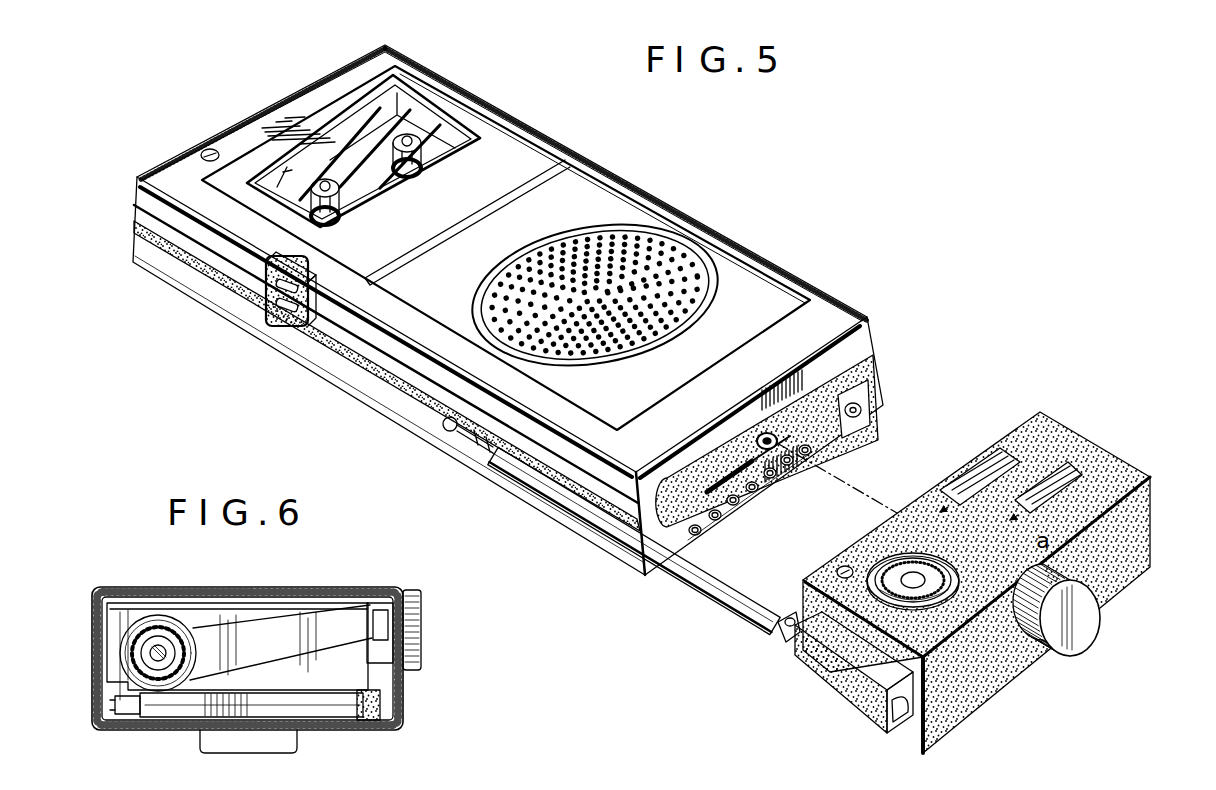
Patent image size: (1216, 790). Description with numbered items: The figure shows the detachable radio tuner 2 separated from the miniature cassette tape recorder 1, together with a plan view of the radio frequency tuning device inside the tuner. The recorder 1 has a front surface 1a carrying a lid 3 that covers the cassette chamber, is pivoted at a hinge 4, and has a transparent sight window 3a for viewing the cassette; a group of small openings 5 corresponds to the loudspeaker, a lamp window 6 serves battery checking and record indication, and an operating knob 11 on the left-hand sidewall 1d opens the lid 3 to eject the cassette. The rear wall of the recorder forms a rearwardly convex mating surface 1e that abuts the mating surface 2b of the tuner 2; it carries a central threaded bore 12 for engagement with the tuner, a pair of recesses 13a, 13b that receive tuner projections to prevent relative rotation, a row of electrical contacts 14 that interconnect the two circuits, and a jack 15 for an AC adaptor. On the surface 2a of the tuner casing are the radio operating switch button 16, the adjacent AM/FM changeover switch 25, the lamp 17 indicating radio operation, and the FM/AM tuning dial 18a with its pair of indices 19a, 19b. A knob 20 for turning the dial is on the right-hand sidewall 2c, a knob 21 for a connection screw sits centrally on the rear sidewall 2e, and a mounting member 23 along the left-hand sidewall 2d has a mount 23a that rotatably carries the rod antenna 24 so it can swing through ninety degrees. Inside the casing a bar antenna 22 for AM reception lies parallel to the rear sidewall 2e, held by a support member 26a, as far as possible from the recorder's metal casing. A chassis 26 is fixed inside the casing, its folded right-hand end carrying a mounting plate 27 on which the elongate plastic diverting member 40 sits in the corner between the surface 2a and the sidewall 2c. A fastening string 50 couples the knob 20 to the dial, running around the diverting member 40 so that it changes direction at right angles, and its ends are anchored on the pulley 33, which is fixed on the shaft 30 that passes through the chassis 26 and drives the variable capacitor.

In FIG. 5, the tape recorder 1 is at (622, 146).
In FIG. 5, the front surface 1a is at (630, 215).
In FIG. 5, the left-hand sidewall 1d is at (380, 393).
In FIG. 5, the mating surface 1e is at (868, 352).
In FIG. 5, the radio tuner 2 is at (1050, 410).
In FIG. 6, the radio tuner 2 is at (88, 575).
In FIG. 5, the surface 2a is at (1115, 470).
In FIG. 5, the mating surface 2b is at (910, 500).
In FIG. 6, the mating surface 2b is at (355, 587).
In FIG. 6, the right-hand sidewall 2c is at (408, 707).
In FIG. 5, the left-hand sidewall 2d is at (897, 730).
In FIG. 5, the rear sidewall 2e is at (1137, 537).
In FIG. 5, the lid 3 is at (420, 95).
In FIG. 5, the transparent sight window 3a is at (445, 125).
In FIG. 5, the hinge 4 is at (560, 163).
In FIG. 5, the small openings 5 is at (655, 248).
In FIG. 5, the lamp window 6 is at (200, 152).
In FIG. 5, the operating knob 11 is at (278, 316).
In FIG. 5, the threaded bore 12 is at (757, 436).
In FIG. 5, the recess 13a is at (712, 478).
In FIG. 5, the recess 13b is at (822, 400).
In FIG. 5, the electrical contacts 14 is at (800, 490).
In FIG. 5, the jack 15 is at (862, 408).
In FIG. 5, the radio operating switch button 16 is at (955, 470).
In FIG. 5, the lamp 17 is at (838, 568).
In FIG. 5, the FM/AM tuning dial 18a is at (935, 578).
In FIG. 5, the index 19a is at (868, 560).
In FIG. 5, the index 19b is at (957, 607).
In FIG. 6, the knob 20 is at (421, 607).
In FIG. 5, the knob 21 is at (1092, 622).
In FIG. 6, the knob 21 is at (205, 740).
In FIG. 6, the bar antenna 22 is at (323, 705).
In FIG. 5, the mounting member 23 is at (828, 668).
In FIG. 5, the mount 23a is at (783, 637).
In FIG. 5, the rod antenna 24 is at (728, 594).
In FIG. 5, the AM/FM changeover switch 25 is at (1065, 465).
In FIG. 6, the chassis 26 is at (128, 614).
In FIG. 6, the support member 26a is at (378, 712).
In FIG. 6, the mounting plate 27 is at (398, 668).
In FIG. 6, the shaft 30 is at (140, 651).
In FIG. 6, the pulley 33 is at (122, 642).
In FIG. 6, the diverting member 40 is at (386, 650).
In FIG. 6, the fastening string 50 is at (240, 607).